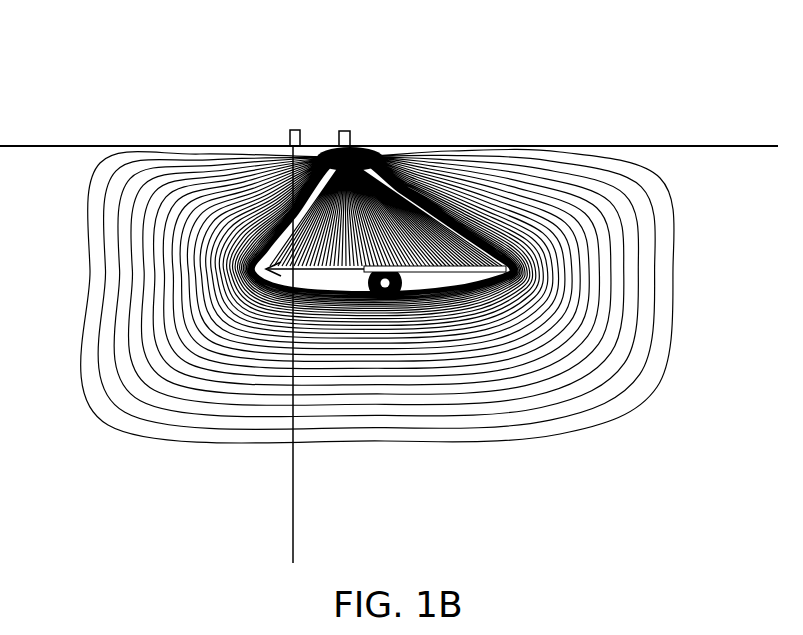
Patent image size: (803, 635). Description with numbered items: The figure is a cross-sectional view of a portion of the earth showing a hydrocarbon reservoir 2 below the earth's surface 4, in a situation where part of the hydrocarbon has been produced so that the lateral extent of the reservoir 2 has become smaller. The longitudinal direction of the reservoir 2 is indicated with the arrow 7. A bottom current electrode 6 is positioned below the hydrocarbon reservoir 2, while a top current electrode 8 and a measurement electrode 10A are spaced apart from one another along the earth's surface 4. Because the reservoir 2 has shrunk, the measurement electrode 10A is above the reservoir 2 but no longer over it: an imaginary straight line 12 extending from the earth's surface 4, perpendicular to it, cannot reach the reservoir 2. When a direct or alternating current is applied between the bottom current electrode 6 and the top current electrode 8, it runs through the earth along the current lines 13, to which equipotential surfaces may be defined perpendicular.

The hydrocarbon reservoir 2 is at (470, 272).
The earth's surface 4 is at (728, 146).
The bottom current electrode 6 is at (392, 295).
The arrow 7 is at (285, 266).
The top current electrode 8 is at (345, 132).
The measurement electrode 10A is at (292, 130).
The imaginary straight line 12 is at (292, 487).
The current lines 13 is at (670, 348).